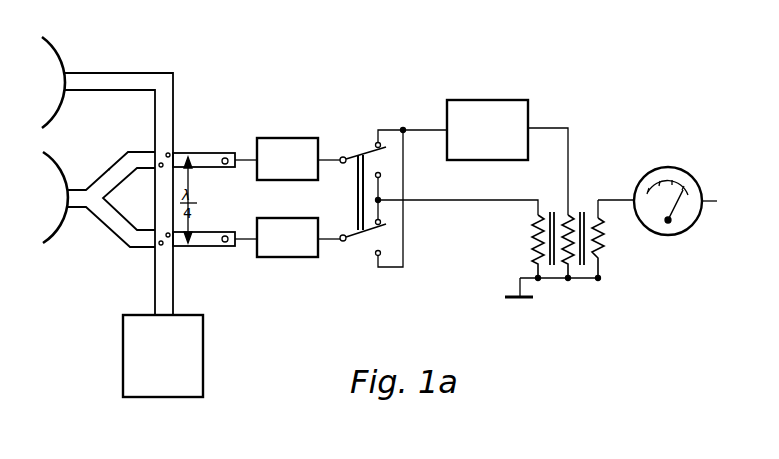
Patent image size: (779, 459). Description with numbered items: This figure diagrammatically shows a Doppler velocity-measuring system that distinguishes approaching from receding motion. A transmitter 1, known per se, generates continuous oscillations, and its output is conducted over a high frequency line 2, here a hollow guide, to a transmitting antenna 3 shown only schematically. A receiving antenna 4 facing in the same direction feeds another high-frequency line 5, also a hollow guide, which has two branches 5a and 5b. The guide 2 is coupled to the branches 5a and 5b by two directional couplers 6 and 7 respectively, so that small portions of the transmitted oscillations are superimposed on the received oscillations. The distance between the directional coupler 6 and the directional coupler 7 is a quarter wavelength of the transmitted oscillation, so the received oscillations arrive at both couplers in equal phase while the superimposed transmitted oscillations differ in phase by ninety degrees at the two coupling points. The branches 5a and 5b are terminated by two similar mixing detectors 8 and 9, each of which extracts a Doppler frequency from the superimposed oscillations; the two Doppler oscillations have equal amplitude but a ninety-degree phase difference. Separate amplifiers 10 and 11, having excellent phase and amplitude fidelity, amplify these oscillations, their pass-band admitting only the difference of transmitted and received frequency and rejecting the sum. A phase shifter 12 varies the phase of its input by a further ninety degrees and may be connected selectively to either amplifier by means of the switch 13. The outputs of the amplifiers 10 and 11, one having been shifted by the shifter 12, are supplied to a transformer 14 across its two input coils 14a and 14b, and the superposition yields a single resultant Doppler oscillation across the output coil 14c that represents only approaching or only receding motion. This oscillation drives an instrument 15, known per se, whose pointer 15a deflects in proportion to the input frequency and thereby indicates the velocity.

The transmitter 1 is at (165, 397).
The high frequency line 2 is at (178, 100).
The transmitting antenna 3 is at (63, 60).
The receiving antenna 4 is at (52, 243).
The high-frequency line 5 is at (76, 203).
The branch 5a is at (118, 220).
The branch 5b is at (116, 172).
The directional coupler 6 is at (161, 243).
The directional coupler 7 is at (170, 155).
The mixing detector 8 is at (229, 242).
The mixing detector 9 is at (228, 158).
The amplifier 10 is at (278, 227).
The amplifier 11 is at (290, 147).
The phase shifter 12 is at (487, 144).
The switch 13 is at (357, 233).
The transformer 14 is at (578, 262).
The input coil 14a is at (534, 221).
The input coil 14b is at (581, 222).
The output coil 14c is at (601, 245).
The instrument 15 is at (683, 217).
The pointer 15a is at (727, 203).